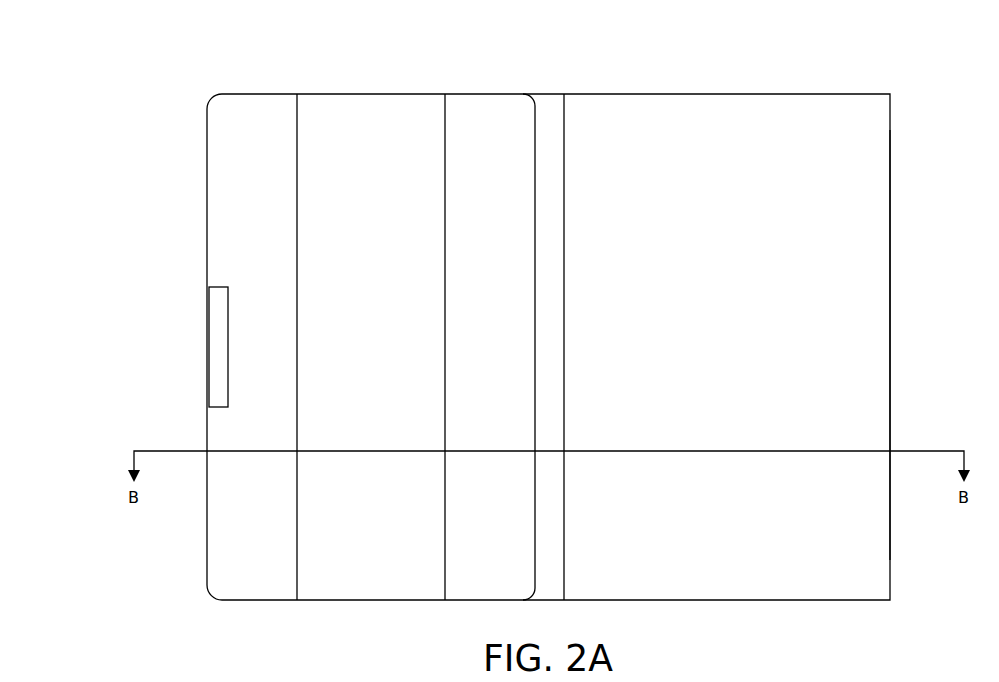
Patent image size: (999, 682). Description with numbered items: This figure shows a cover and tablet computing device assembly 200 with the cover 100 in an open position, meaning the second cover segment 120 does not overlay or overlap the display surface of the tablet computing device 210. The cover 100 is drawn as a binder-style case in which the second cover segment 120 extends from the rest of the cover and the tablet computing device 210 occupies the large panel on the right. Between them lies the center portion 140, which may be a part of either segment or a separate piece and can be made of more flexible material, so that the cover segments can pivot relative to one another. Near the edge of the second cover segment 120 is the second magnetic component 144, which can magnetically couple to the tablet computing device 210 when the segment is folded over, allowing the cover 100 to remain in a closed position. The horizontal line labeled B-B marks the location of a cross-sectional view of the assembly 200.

The cover 100 is at (405, 69).
The second cover segment 120 is at (238, 122).
The center portion 140 is at (553, 116).
The second magnetic component 144 is at (222, 340).
The cover and tablet computing device assembly 200 is at (842, 57).
The tablet computing device 210 is at (853, 229).